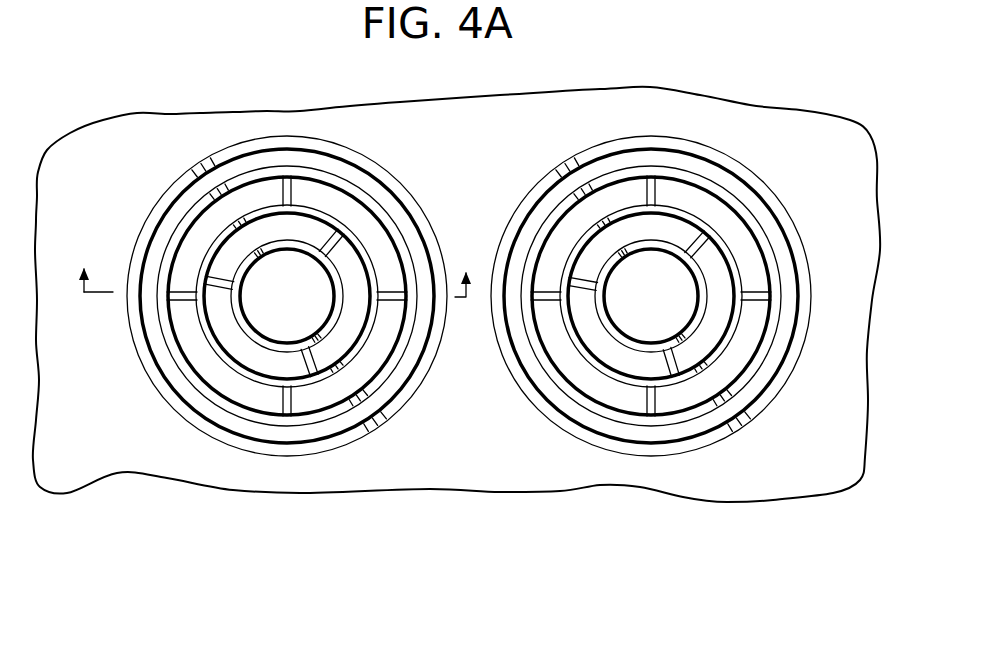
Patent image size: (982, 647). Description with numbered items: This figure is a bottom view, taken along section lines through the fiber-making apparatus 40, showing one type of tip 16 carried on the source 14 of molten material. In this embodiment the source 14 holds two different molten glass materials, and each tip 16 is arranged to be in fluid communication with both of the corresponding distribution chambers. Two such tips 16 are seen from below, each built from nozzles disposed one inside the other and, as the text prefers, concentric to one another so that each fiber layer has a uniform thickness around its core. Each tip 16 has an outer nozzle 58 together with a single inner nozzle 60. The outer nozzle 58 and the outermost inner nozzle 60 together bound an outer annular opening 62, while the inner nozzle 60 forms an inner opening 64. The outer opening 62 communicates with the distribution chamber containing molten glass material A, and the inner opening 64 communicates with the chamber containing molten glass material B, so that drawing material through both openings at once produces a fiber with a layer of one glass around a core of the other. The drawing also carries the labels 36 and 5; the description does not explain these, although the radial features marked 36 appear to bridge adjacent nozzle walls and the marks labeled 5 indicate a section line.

The source 14 is at (326, 103).
The apparatus 40 is at (456, 262).
The tip 16 is at (461, 268).
The outer nozzle 58 is at (172, 188).
The inner nozzle 60 is at (245, 175).
The outer annular opening 62 is at (628, 157).
The inner opening 64 is at (700, 207).
The bridge connectors 36 is at (291, 192).
The section line for FIG. 5 is at (270, 285).